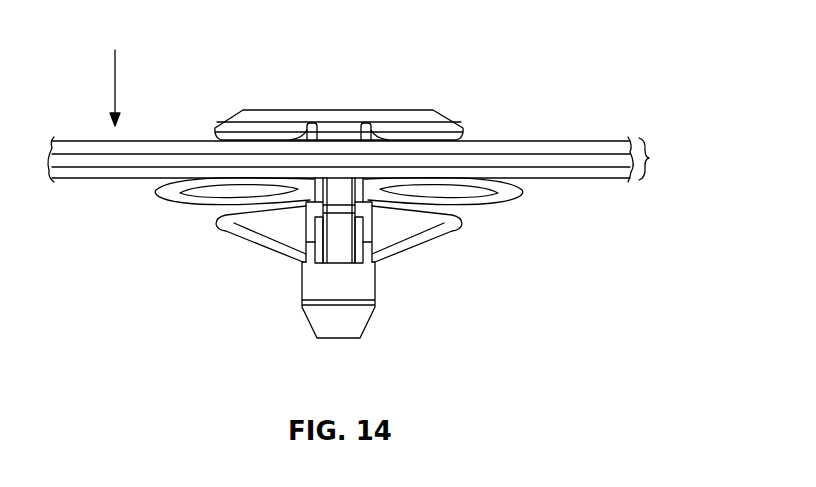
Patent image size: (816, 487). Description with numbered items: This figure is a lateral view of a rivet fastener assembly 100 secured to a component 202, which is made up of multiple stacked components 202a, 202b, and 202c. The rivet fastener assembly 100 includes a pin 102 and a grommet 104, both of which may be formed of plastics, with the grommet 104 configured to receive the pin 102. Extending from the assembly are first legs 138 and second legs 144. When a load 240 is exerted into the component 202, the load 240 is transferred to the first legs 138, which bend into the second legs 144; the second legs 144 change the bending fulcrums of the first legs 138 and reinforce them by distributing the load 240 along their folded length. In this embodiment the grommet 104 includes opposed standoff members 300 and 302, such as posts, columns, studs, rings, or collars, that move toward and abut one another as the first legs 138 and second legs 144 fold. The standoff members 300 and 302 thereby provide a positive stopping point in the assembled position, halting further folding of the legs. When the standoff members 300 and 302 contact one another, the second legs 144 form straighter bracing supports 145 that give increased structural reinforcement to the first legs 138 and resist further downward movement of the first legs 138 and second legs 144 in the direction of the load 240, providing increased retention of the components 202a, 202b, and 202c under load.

The rivet fastener assembly 100 is at (444, 66).
The pin 102 is at (308, 337).
The grommet 104 is at (250, 98).
The first legs 138 is at (337, 193).
The second legs 144 is at (231, 233).
The bracing supports 145 is at (251, 247).
The component 202 is at (370, 159).
The component 202a is at (586, 147).
The component 202b is at (566, 160).
The component 202c is at (564, 170).
The load 240 is at (122, 88).
The standoff member 300 is at (309, 222).
The standoff member 302 is at (310, 252).